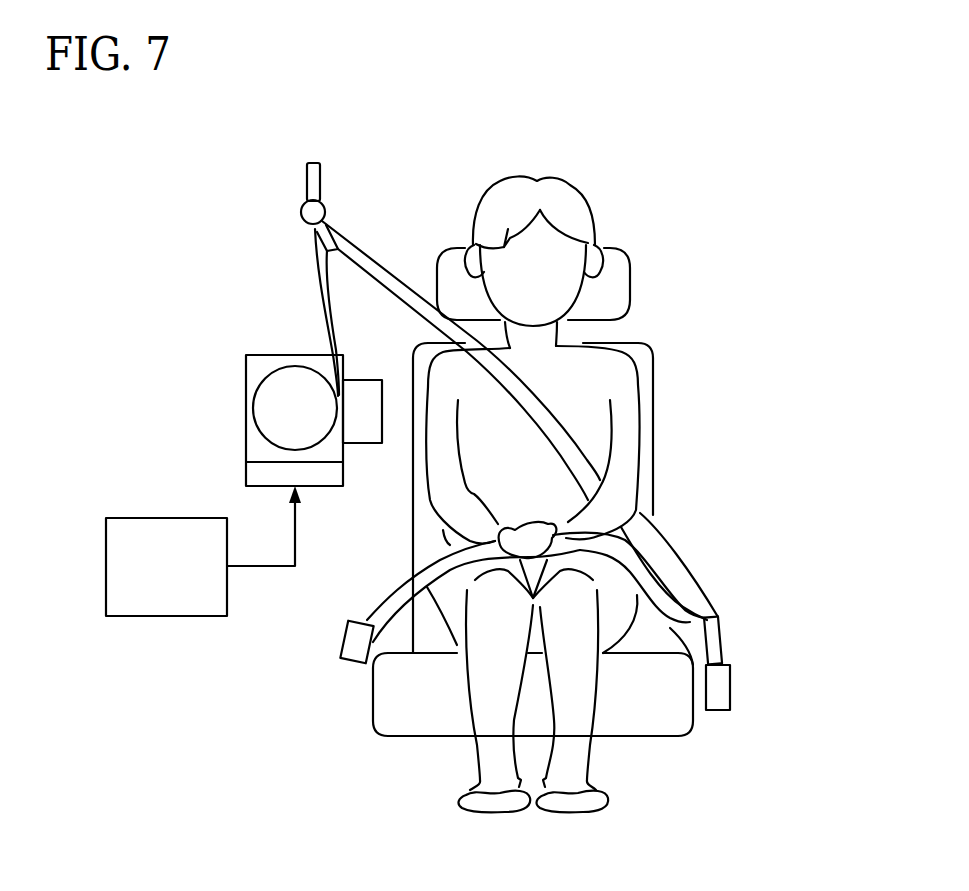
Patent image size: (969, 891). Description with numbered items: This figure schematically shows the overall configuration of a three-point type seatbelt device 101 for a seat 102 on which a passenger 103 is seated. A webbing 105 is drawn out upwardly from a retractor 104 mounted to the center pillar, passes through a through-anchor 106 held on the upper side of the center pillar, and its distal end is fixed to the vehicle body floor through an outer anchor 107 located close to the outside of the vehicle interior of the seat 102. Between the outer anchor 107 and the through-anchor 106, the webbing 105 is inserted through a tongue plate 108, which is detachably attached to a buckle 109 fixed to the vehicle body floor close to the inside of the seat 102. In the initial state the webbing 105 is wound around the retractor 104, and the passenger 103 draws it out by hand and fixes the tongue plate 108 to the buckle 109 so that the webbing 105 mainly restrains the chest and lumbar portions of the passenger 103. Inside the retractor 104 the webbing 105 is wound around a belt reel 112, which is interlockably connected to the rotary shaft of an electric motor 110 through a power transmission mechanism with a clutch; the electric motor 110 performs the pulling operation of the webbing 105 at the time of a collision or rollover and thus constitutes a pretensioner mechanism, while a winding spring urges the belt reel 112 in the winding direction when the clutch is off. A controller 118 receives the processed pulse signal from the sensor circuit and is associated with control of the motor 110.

The seatbelt device 101 is at (370, 177).
The seat 102 is at (652, 718).
The passenger 103 is at (582, 190).
The retractor 104 is at (290, 350).
The webbing 105 is at (680, 563).
The through-anchor 106 is at (312, 235).
The outer anchor 107 is at (350, 640).
The tongue plate 108 is at (731, 646).
The buckle 109 is at (720, 687).
The electric motor 110 is at (330, 477).
The belt reel 112 is at (275, 413).
The controller 118 is at (155, 610).